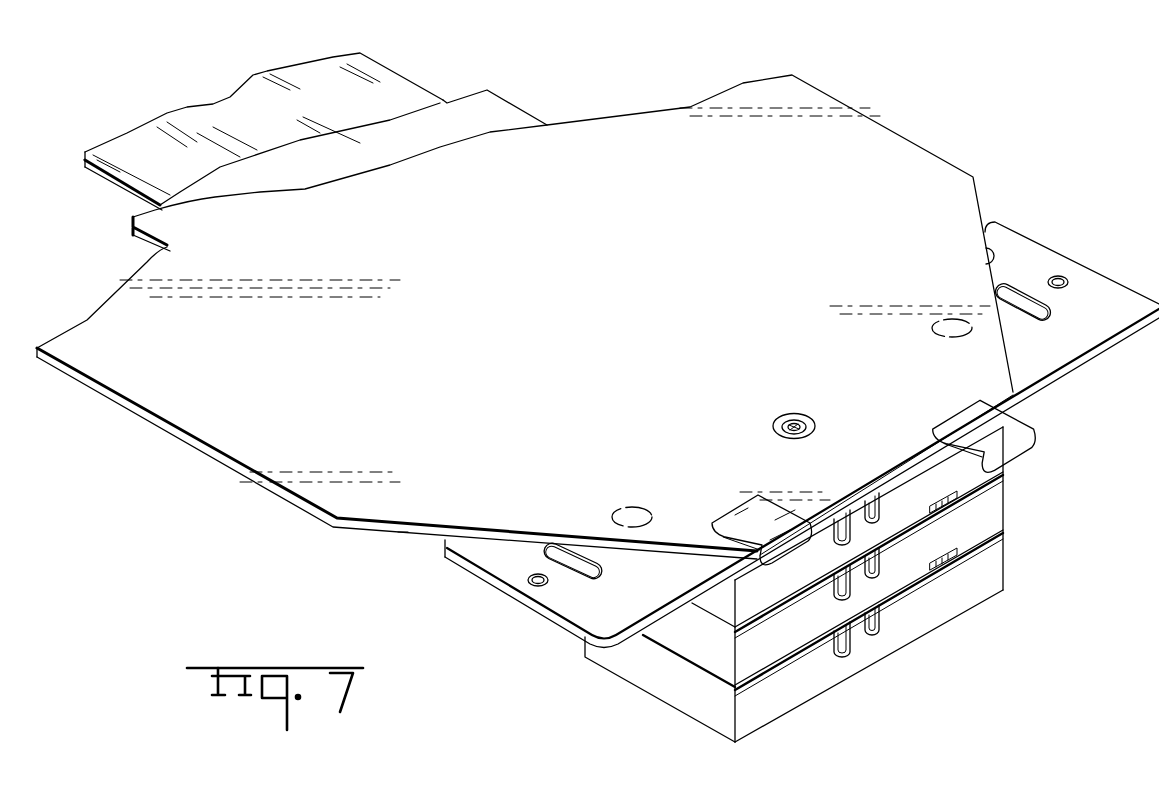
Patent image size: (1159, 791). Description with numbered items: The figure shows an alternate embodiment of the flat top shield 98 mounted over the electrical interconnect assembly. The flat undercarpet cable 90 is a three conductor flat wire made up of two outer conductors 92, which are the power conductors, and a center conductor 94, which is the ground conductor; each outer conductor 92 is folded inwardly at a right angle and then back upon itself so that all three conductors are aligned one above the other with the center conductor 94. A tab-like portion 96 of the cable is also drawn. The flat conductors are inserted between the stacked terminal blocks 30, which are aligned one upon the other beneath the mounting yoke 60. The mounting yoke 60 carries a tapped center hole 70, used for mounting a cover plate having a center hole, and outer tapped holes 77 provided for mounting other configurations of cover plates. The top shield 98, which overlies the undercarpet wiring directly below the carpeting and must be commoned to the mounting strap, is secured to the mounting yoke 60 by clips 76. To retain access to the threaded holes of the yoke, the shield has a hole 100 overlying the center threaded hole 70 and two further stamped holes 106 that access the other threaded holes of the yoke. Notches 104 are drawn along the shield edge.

The terminal block 30 is at (1005, 460).
The mounting yoke 60 is at (586, 608).
The tapped center hole 70 is at (778, 424).
The clips 76 is at (773, 520).
The tapped holes 77 is at (1062, 277).
The flat undercarpet cable 90 is at (402, 70).
The outer conductors 92 is at (125, 146).
The center conductor 94 is at (227, 110).
The tab 96 is at (507, 118).
The top shield 98 is at (575, 248).
The hole 100 is at (802, 413).
The edge notch 104 is at (993, 262).
The stamped holes 106 is at (951, 315).